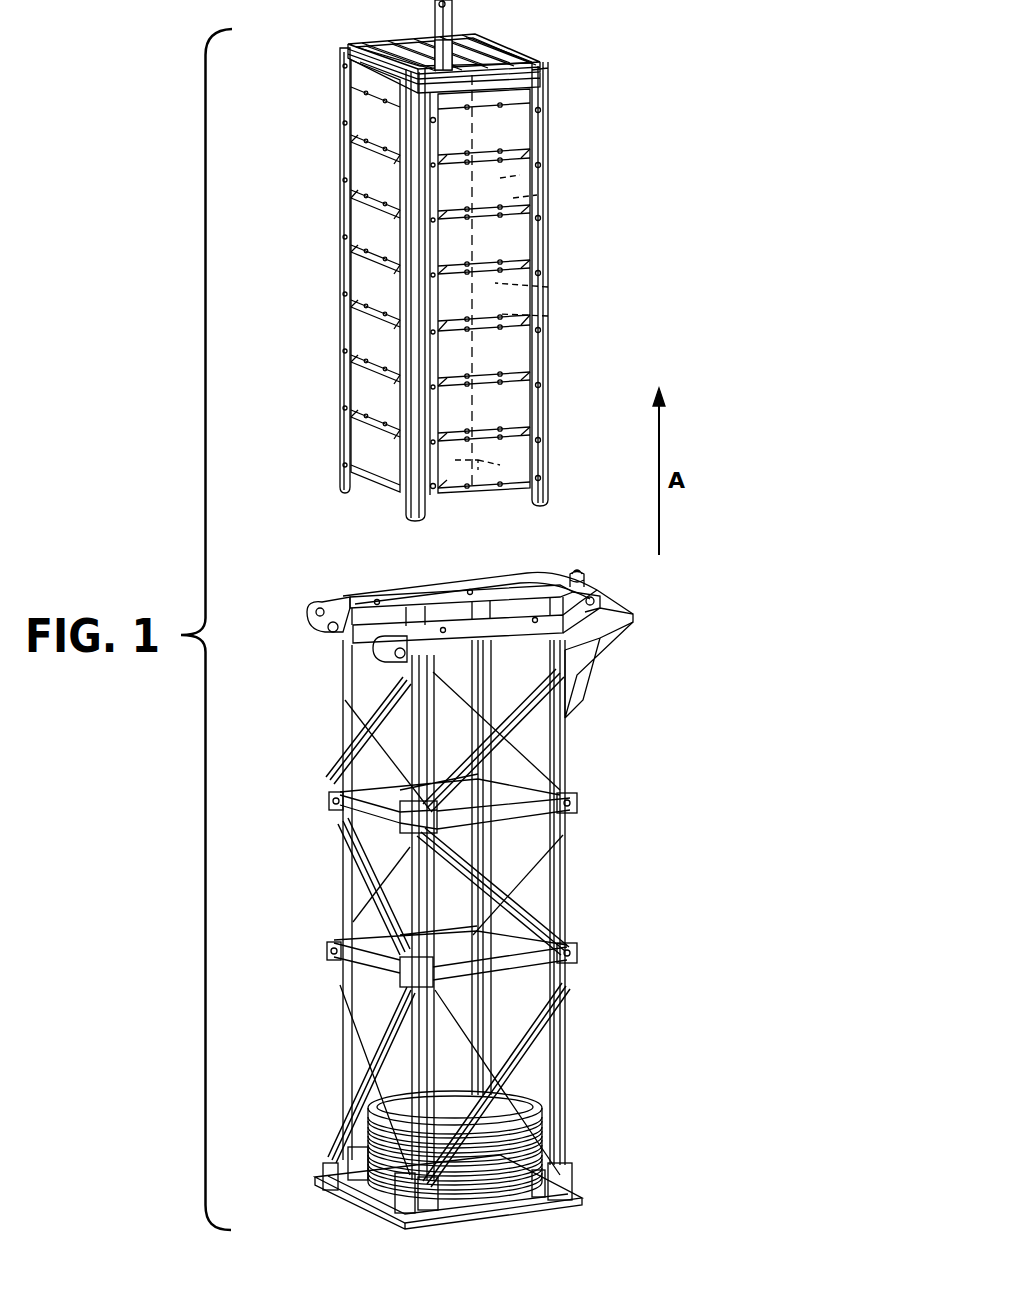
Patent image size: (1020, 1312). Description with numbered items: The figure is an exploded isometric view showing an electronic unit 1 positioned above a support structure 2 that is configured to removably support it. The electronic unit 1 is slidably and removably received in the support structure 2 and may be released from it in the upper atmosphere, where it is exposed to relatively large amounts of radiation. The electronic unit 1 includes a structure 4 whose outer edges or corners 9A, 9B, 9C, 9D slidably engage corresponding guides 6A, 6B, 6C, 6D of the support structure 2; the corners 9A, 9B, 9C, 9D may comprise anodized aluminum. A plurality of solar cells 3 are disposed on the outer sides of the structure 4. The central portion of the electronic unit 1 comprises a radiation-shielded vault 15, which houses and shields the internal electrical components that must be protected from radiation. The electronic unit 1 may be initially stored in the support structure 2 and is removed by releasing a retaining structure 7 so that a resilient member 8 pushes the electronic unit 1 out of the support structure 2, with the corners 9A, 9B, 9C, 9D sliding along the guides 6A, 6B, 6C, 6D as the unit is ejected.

The electronic unit 1 is at (556, 209).
The support structure 2 is at (628, 595).
The solar cells 3 is at (547, 163).
The structure 4 is at (550, 110).
The retaining structure 7 is at (446, 574).
The resilient member 8 is at (513, 1147).
The corner 9A is at (340, 235).
The corner 9B is at (408, 512).
The corner 9C is at (548, 398).
The corner 9D is at (550, 288).
The radiation-shielded vault 15 is at (548, 316).
The guide 6A is at (352, 697).
The guide 6B is at (343, 862).
The guide 6C is at (575, 768).
The guide 6D is at (480, 850).